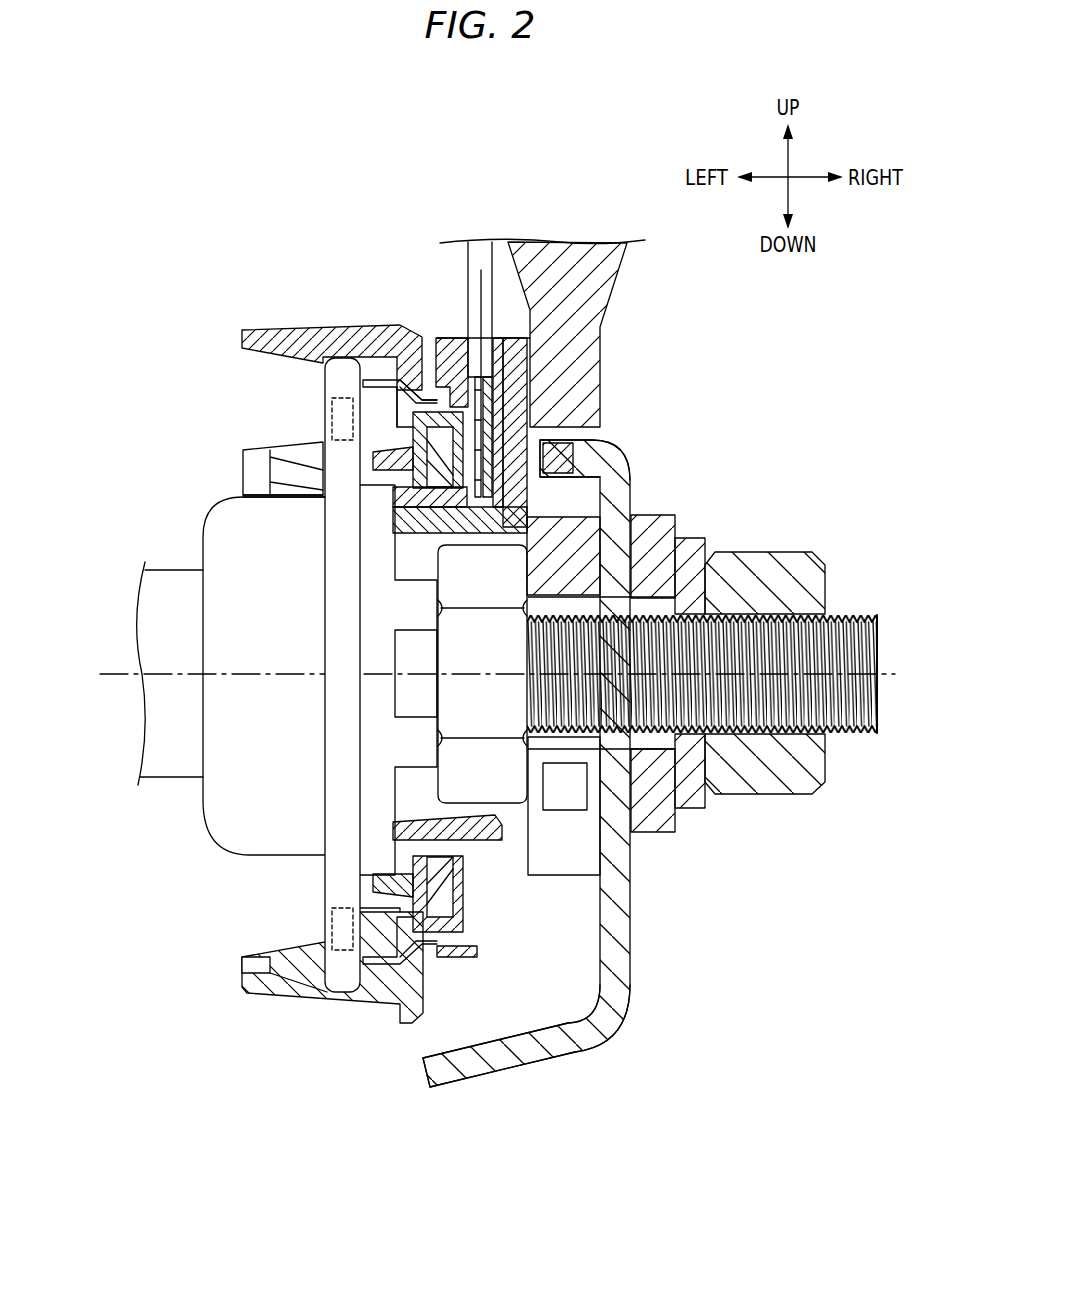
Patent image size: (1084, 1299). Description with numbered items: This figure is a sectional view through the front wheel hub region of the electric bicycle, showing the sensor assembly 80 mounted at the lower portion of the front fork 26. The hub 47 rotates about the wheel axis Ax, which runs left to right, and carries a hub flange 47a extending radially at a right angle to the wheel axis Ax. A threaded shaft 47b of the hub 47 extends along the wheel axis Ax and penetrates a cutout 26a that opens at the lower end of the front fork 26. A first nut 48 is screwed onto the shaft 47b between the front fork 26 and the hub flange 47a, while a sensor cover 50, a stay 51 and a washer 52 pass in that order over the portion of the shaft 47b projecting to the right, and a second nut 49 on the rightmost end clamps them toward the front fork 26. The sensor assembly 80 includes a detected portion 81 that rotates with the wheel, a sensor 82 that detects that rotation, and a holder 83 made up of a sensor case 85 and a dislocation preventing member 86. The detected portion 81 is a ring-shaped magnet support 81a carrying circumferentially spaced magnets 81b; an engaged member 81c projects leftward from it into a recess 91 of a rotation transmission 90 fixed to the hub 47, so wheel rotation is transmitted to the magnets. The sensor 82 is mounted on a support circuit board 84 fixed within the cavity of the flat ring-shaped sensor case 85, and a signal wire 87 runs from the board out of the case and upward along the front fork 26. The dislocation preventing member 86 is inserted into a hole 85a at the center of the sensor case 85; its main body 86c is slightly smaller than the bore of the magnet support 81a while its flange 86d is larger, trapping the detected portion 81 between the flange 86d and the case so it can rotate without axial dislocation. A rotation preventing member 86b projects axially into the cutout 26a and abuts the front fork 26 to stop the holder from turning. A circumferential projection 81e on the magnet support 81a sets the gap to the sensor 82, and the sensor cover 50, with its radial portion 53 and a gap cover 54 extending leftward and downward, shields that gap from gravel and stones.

The front fork 26 is at (585, 345).
The cutout 26a is at (530, 622).
The hub 47 is at (235, 832).
The hub flange 47a is at (335, 893).
The shaft 47b is at (832, 702).
The first nut 48 is at (510, 800).
The second nut 49 is at (768, 786).
The sensor cover 50 is at (563, 778).
The stay 51 is at (650, 823).
The washer 52 is at (690, 802).
The portion 53 is at (630, 895).
The gap cover 54 is at (550, 1053).
The sensor assembly 80 is at (427, 325).
The detected portion 81 is at (397, 362).
The magnet support 81a is at (419, 395).
The magnet 81b is at (400, 413).
The engaged member 81c is at (370, 455).
The circumferential projection 81e is at (543, 477).
The sensor 82 is at (477, 457).
The holder 83 is at (470, 332).
The support circuit board 84 is at (483, 397).
The sensor case 85 is at (447, 333).
The hole 85a is at (492, 527).
The dislocation preventing member 86 is at (512, 517).
The rotation preventing member 86b is at (562, 803).
The main body 86c is at (412, 512).
The flange 86d is at (325, 478).
The signal wire 87 is at (483, 273).
The rotation transmission 90 is at (300, 318).
The recess 91 is at (265, 450).
The wheel axis Ax is at (122, 674).